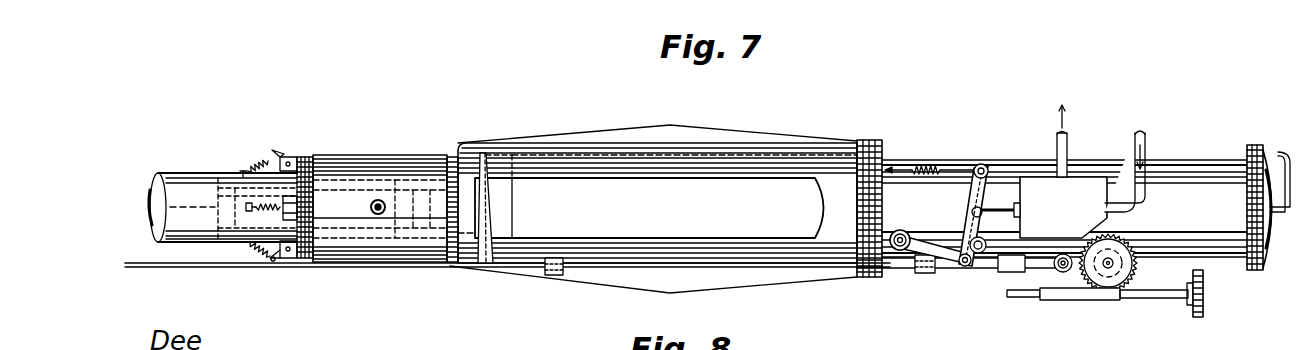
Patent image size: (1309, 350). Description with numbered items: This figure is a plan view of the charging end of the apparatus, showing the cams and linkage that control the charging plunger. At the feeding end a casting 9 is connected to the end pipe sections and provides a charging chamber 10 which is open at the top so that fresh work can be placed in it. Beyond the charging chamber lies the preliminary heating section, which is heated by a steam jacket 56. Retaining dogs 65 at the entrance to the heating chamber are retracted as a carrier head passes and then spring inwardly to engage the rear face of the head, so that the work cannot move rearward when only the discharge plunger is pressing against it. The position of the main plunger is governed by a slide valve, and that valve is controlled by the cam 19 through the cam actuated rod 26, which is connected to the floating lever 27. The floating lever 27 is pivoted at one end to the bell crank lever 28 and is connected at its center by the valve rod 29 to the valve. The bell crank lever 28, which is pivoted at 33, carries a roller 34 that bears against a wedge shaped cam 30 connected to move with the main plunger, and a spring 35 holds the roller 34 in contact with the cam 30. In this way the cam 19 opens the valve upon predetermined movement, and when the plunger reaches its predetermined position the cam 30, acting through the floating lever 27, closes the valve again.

The casting 9 is at (760, 155).
The charging chamber 10 is at (614, 200).
The steam jacket 56 is at (387, 162).
The retaining dogs 65 is at (278, 164).
The spring 35 is at (925, 165).
The floating lever 27 is at (983, 186).
The bell crank lever 28 is at (935, 240).
The valve rod 29 is at (1001, 211).
The roller 34 is at (899, 230).
The pivot 33 is at (961, 258).
The cam actuated rod 26 is at (985, 254).
The wedge shaped cam 30 is at (898, 262).
The cam 19 is at (1082, 280).